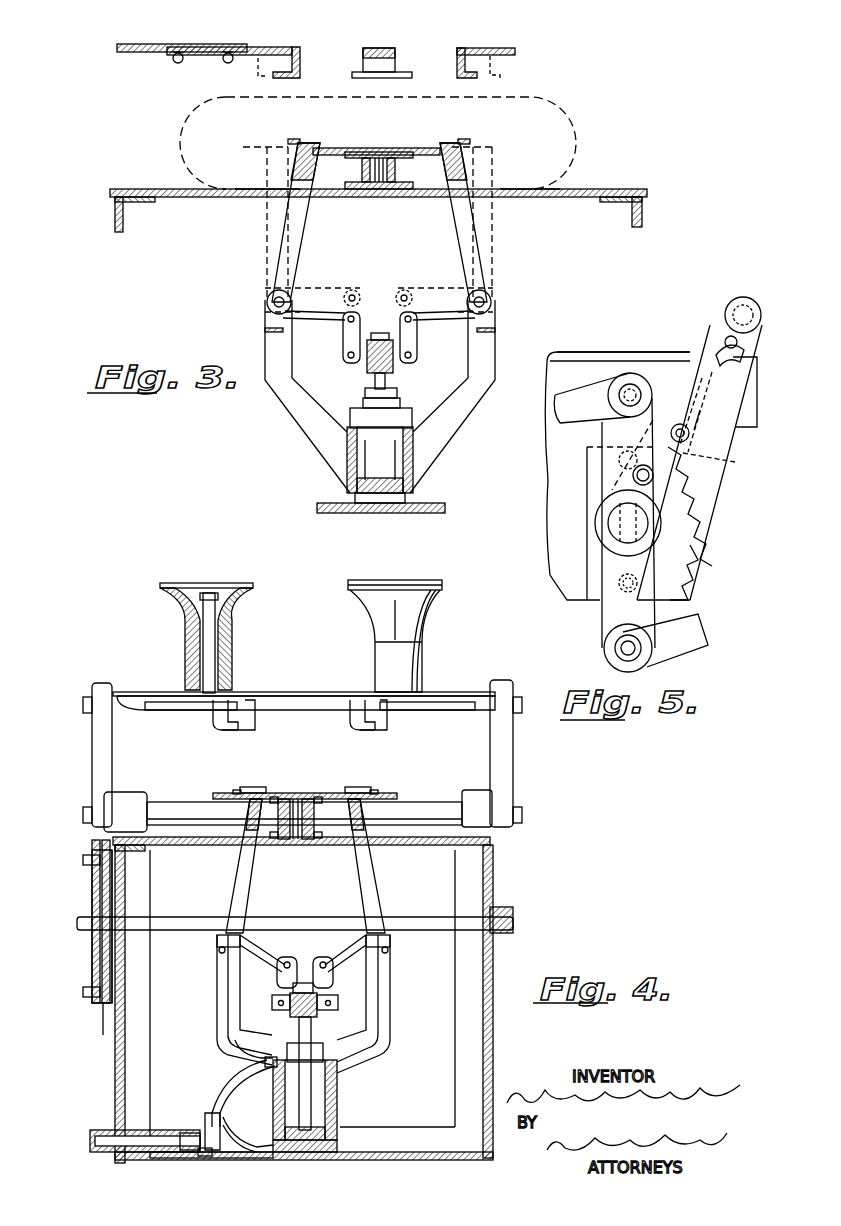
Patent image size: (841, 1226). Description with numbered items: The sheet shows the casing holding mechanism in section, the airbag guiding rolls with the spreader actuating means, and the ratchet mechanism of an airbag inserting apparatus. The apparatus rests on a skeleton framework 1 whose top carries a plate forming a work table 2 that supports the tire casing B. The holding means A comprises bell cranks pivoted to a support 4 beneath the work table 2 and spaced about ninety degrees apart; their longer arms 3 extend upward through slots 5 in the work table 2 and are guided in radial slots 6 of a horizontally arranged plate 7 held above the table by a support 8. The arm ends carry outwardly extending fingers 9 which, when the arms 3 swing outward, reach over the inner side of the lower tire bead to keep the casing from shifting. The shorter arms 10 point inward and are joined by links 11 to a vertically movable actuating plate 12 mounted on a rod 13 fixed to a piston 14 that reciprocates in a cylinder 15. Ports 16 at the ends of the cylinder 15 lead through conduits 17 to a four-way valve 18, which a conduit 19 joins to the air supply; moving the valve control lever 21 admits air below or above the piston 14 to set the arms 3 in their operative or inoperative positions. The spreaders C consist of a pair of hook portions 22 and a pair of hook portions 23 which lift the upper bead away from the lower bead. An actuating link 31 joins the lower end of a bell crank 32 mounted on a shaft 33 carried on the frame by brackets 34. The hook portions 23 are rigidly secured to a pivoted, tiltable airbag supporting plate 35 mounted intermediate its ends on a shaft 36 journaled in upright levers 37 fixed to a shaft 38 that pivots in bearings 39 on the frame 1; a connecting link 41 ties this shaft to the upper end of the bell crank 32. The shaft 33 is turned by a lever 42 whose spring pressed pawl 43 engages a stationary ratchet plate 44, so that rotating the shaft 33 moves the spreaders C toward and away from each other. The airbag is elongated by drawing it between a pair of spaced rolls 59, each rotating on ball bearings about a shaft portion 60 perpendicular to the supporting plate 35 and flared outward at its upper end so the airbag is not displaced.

In FIG. 3, the skeleton framework 1 is at (643, 213).
In FIG. 4, the skeleton framework 1 is at (460, 887).
In FIG. 3, the work table 2 is at (640, 189).
In FIG. 5, the work table 2 is at (653, 353).
In FIG. 4, the work table 2 is at (408, 846).
In FIG. 3, the longer arms 3 is at (300, 228).
In FIG. 4, the longer arms 3 is at (245, 872).
In FIG. 3, the support 4 is at (280, 420).
In FIG. 4, the support 4 is at (392, 1020).
In FIG. 3, the slots 5 is at (250, 189).
In FIG. 3, the radial slots 6 is at (268, 146).
In FIG. 3, the horizontally arranged plate 7 is at (430, 148).
In FIG. 4, the horizontally arranged plate 7 is at (293, 793).
In FIG. 3, the support 8 is at (412, 170).
In FIG. 4, the support 8 is at (318, 793).
In FIG. 3, the outwardly extending fingers 9 is at (296, 139).
In FIG. 4, the outwardly extending fingers 9 is at (235, 789).
In FIG. 3, the shorter arms 10 is at (318, 303).
In FIG. 4, the shorter arms 10 is at (335, 955).
In FIG. 3, the links 11 is at (343, 340).
In FIG. 4, the links 11 is at (333, 983).
In FIG. 3, the actuating plate 12 is at (366, 365).
In FIG. 4, the actuating plate 12 is at (272, 1003).
In FIG. 3, the rod 13 is at (390, 380).
In FIG. 4, the rod 13 is at (312, 1031).
In FIG. 3, the piston 14 is at (413, 485).
In FIG. 4, the piston 14 is at (337, 1120).
In FIG. 3, the cylinder 15 is at (413, 470).
In FIG. 4, the cylinder 15 is at (337, 1100).
In FIG. 4, the ports 16 is at (235, 1047).
In FIG. 4, the conduits 17 is at (232, 1080).
In FIG. 4, the four-way valve 18 is at (207, 1120).
In FIG. 4, the conduit 19 is at (205, 1155).
In FIG. 4, the valve control lever 21 is at (95, 1130).
In FIG. 3, the hook portions 22 is at (457, 62).
In FIG. 3, the hook portions 23 is at (300, 74).
In FIG. 4, the hook portions 23 is at (238, 722).
In FIG. 5, the actuating link 31 is at (680, 650).
In FIG. 4, the actuating link 31 is at (90, 997).
In FIG. 5, the bell crank 32 is at (610, 618).
In FIG. 4, the bell crank 32 is at (108, 968).
In FIG. 5, the shaft 33 is at (610, 525).
In FIG. 4, the shaft 33 is at (187, 922).
In FIG. 5, the brackets 34 is at (562, 550).
In FIG. 4, the brackets 34 is at (95, 848).
In FIG. 3, the airbag supporting plate 35 is at (150, 43).
In FIG. 4, the airbag supporting plate 35 is at (467, 692).
In FIG. 4, the shaft 36 is at (428, 710).
In FIG. 4, the upright levers 37 is at (92, 757).
In FIG. 4, the shaft 38 is at (187, 806).
In FIG. 4, the bearings 39 is at (122, 795).
In FIG. 5, the connecting link 41 is at (593, 393).
In FIG. 4, the connecting link 41 is at (90, 885).
In FIG. 5, the lever 42 is at (713, 330).
In FIG. 4, the lever 42 is at (103, 950).
In FIG. 5, the spring pressed pawl 43 is at (717, 506).
In FIG. 5, the stationary ratchet plate 44 is at (700, 548).
In FIG. 4, the stationary ratchet plate 44 is at (103, 1010).
In FIG. 4, the rolls 59 is at (185, 655).
In FIG. 4, the shaft portion 60 is at (207, 622).
In FIG. 3, the holding means A is at (315, 146).
In FIG. 4, the holding means A is at (301, 775).
In FIG. 3, the tire casing B is at (577, 135).
In FIG. 3, the spreaders C is at (294, 47).
In FIG. 4, the spreaders C is at (309, 745).